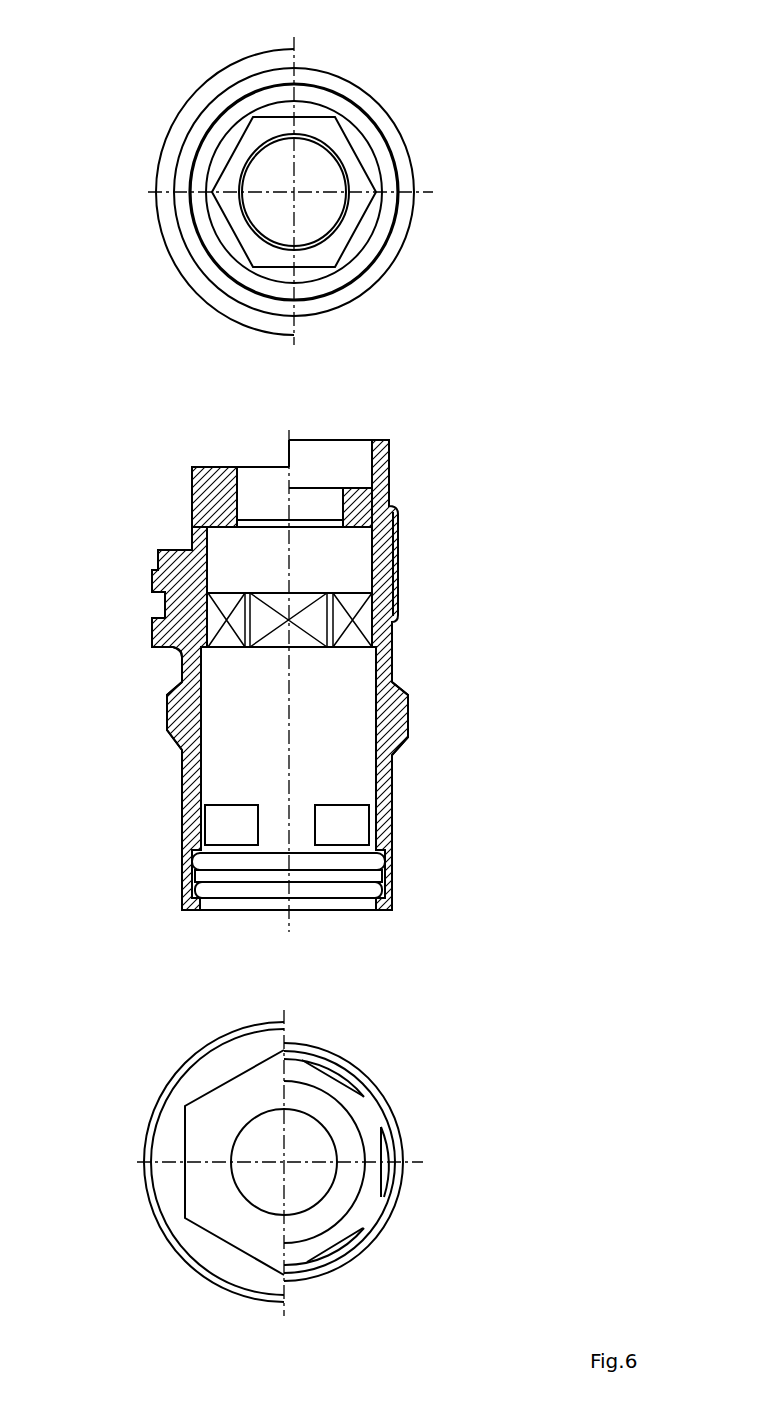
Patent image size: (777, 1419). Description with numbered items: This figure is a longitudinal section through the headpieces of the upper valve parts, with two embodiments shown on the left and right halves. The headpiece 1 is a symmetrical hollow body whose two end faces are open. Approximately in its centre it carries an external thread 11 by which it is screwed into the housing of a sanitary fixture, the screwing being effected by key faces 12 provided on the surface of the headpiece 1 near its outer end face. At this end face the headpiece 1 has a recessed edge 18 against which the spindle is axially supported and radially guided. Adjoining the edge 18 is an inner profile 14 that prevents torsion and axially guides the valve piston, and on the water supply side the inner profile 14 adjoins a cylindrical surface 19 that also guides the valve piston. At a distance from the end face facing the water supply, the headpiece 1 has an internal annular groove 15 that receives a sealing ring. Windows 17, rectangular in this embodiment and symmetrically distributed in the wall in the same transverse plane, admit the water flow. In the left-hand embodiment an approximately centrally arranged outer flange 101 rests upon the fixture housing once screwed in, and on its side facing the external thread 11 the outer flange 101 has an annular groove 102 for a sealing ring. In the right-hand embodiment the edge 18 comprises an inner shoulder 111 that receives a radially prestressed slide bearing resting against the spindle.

The headpiece 1 is at (200, 100).
The external thread 11 is at (206, 265).
The key faces 12 is at (193, 496).
The inner profile 14 is at (222, 212).
The internal annular groove 15 is at (186, 905).
The windows 17 is at (216, 833).
The recessed edge 18 is at (240, 165).
The cylindrical surface 19 is at (380, 171).
The outer flange 101 is at (240, 315).
The annular groove 102 is at (176, 672).
The inner shoulder 111 is at (389, 460).